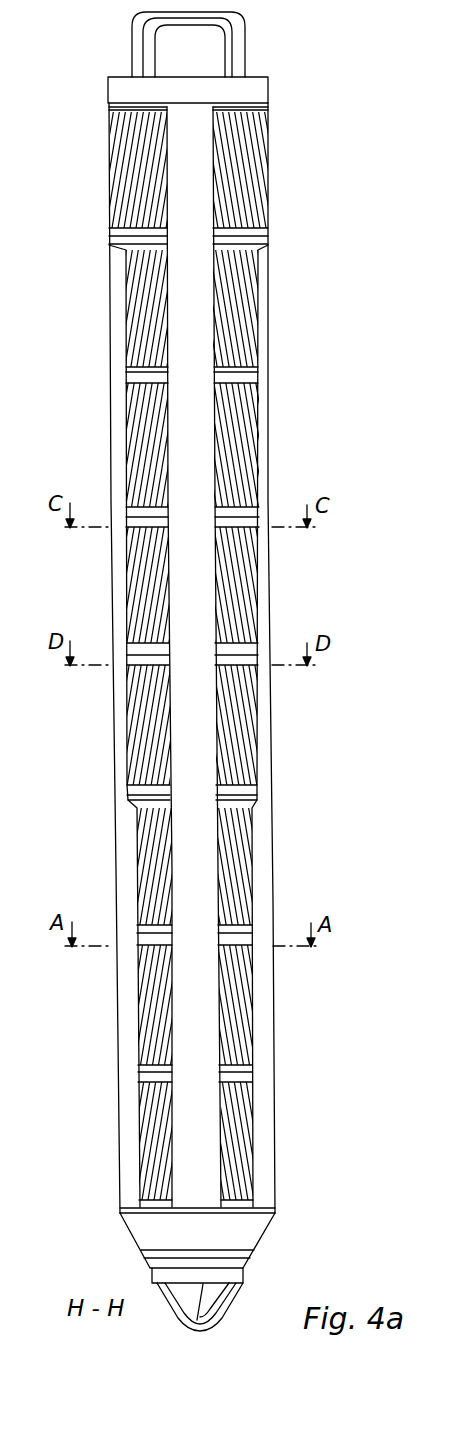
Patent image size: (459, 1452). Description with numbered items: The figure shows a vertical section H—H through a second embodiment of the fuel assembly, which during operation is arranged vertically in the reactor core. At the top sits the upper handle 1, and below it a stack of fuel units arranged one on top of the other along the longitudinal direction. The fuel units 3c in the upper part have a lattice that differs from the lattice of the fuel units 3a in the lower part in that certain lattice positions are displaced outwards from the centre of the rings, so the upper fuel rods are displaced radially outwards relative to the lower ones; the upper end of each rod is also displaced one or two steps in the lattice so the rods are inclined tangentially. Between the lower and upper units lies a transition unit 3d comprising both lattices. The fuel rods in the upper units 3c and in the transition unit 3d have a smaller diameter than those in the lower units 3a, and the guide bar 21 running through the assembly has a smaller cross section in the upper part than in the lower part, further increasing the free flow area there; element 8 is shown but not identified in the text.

The upper handle 1 is at (240, 40).
The fuel units (lower) 3a is at (150, 1026).
The fuel units (upper) 3c is at (142, 422).
The transition unit 3d is at (148, 735).
The strand 8 is at (222, 443).
The guide bar 21 is at (273, 849).